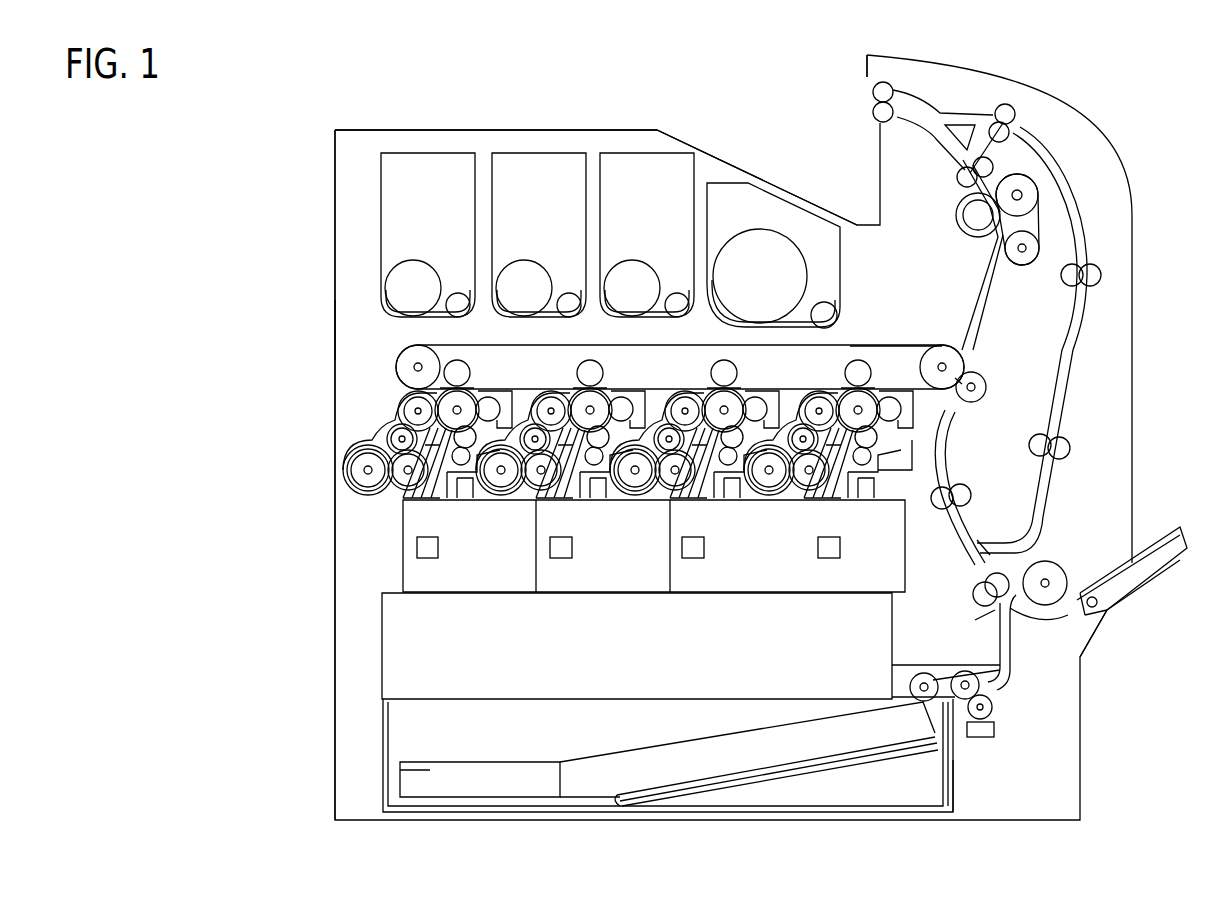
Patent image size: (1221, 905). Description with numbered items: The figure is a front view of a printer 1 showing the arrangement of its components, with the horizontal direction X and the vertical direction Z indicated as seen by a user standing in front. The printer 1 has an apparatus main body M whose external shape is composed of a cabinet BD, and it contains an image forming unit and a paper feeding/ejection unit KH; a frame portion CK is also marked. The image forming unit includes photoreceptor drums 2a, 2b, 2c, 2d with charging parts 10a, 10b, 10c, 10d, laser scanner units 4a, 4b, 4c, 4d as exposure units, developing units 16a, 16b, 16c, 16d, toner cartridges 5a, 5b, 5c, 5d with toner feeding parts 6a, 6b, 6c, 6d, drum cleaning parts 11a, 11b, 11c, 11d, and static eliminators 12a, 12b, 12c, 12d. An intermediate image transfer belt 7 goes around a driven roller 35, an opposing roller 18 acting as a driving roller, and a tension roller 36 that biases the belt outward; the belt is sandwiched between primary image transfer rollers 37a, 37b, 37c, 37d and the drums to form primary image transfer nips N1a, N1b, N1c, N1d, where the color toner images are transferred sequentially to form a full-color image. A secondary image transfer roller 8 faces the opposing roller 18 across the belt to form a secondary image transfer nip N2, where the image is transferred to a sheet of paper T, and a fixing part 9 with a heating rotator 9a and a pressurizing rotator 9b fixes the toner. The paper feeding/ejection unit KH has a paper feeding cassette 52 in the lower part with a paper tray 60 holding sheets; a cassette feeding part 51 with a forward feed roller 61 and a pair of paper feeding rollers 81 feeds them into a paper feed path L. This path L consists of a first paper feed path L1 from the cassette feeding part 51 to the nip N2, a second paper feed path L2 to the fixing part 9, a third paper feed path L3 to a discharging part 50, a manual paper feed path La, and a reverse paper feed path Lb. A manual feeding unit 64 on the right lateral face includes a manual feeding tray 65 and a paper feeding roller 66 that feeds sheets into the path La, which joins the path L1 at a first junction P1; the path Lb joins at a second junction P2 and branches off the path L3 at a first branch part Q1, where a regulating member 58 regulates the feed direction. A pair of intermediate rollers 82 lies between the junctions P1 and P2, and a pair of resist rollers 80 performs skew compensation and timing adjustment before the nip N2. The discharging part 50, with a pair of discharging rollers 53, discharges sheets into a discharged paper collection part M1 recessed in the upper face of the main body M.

The printer 1 is at (285, 83).
The apparatus main body M is at (362, 104).
The discharged paper collection part M1 is at (752, 97).
The cabinet BD is at (325, 163).
The side frame CK is at (355, 328).
The direction X is at (612, 70).
The direction Z is at (275, 372).
The toner cartridge 5a is at (405, 150).
The toner cartridge 5b is at (520, 150).
The toner cartridge 5c is at (620, 150).
The toner cartridge 5d is at (775, 205).
The toner feeding part 6a is at (458, 292).
The toner feeding part 6b is at (569, 292).
The toner feeding part 6c is at (677, 292).
The toner feeding part 6d is at (825, 302).
The tension roller 36 is at (492, 344).
The intermediate image transfer belt 7 is at (895, 342).
The driven roller 35 is at (396, 363).
The opposing roller 18 is at (930, 350).
The primary image transfer roller 37a is at (408, 380).
The primary image transfer roller 37b is at (580, 368).
The primary image transfer roller 37c is at (714, 368).
The primary image transfer roller 37d is at (848, 368).
The static eliminator 12a is at (478, 378).
The static eliminator 12b is at (610, 378).
The static eliminator 12c is at (743, 378).
The static eliminator 12d is at (878, 378).
The photoreceptor drum 2a is at (398, 413).
The photoreceptor drum 2b is at (570, 400).
The photoreceptor drum 2c is at (705, 400).
The photoreceptor drum 2d is at (885, 440).
The drum cleaning part 11a is at (520, 392).
The drum cleaning part 11b is at (653, 392).
The drum cleaning part 11c is at (780, 392).
The drum cleaning part 11d is at (905, 402).
The primary image transfer nip N1a is at (457, 364).
The primary image transfer nip N1b is at (595, 385).
The primary image transfer nip N1c is at (720, 385).
The primary image transfer nip N1d is at (858, 385).
The charging part 10a is at (475, 500).
The charging part 10b is at (610, 500).
The charging part 10c is at (742, 500).
The charging part 10d is at (875, 482).
The developing unit 16a is at (405, 498).
The developing unit 16b is at (543, 498).
The developing unit 16c is at (678, 498).
The developing unit 16d is at (808, 498).
The laser scanner unit 4a is at (438, 552).
The laser scanner unit 4b is at (572, 552).
The laser scanner unit 4c is at (704, 552).
The laser scanner unit 4d is at (840, 552).
The paper feeding cassette 52 is at (375, 781).
The paper tray 60 is at (822, 766).
The sheet of paper T is at (718, 742).
The manual feeding tray 65 is at (1160, 590).
The manual feeding unit 64 is at (1135, 658).
The paper feeding/ejection unit KH is at (975, 780).
The cassette feeding part 51 is at (997, 742).
The forward feed roller 61 is at (905, 686).
The pair of paper feeding rollers 81 is at (958, 665).
The first junction P1 is at (993, 612).
The first paper feed path L1 is at (1010, 655).
The pair of intermediate rollers 82 is at (975, 592).
The paper feeding roller 66 is at (1052, 566).
The manual paper feed path La is at (1045, 618).
The second junction P2 is at (977, 535).
The pair of resist rollers 80 is at (972, 477).
The secondary image transfer roller 8 is at (988, 394).
The secondary image transfer nip N2 is at (961, 333).
The reverse paper feed path Lb is at (1133, 352).
The second paper feed path L2 is at (978, 270).
The heating rotator 9a is at (952, 225).
The pressurizing rotator 9b is at (1036, 278).
The fixing part 9 is at (935, 222).
The third paper feed path L3 is at (920, 130).
The discharging part 50 is at (868, 95).
The pair of discharging rollers 53 is at (868, 70).
The regulating member 58 is at (963, 110).
The first branch part Q1 is at (988, 107).
The paper feed path L is at (1037, 113).